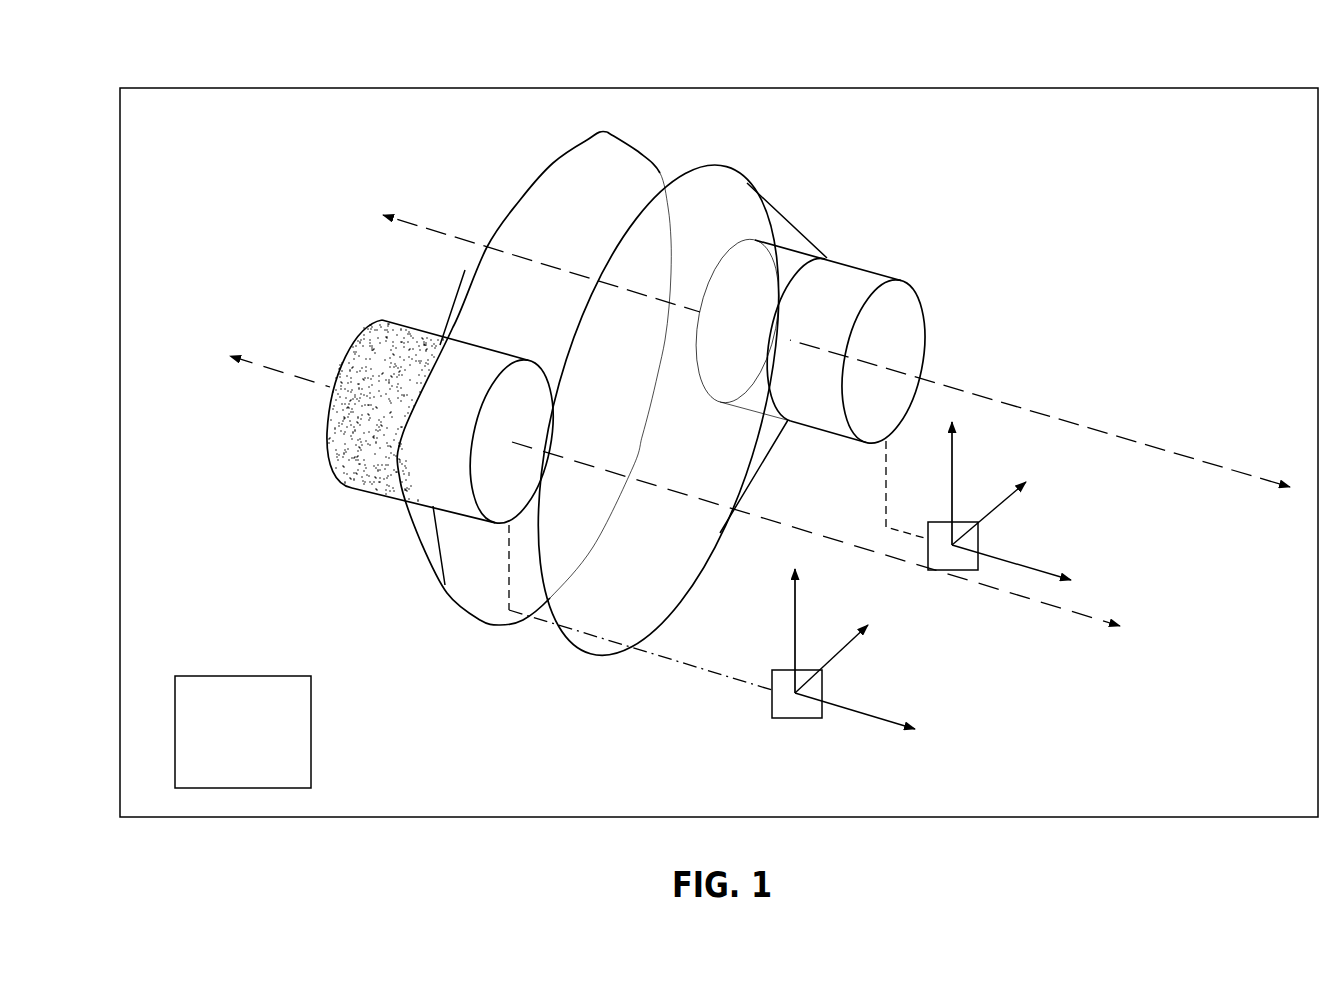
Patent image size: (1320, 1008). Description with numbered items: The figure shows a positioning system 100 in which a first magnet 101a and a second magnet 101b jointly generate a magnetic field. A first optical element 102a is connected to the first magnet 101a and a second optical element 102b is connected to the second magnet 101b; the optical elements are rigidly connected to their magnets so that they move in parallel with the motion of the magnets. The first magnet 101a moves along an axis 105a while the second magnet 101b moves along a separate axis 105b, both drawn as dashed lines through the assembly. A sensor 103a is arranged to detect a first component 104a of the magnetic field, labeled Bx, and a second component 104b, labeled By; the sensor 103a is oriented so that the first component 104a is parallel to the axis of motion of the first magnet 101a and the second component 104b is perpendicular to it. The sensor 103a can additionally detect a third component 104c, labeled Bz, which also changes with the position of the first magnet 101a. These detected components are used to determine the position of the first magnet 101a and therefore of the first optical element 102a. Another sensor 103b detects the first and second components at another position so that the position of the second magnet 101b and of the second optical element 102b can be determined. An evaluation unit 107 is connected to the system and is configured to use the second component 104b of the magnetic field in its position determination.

The positioning system 100 is at (140, 56).
The first magnet 101a is at (380, 320).
The second magnet 101b is at (872, 268).
The first optical element 102a is at (523, 193).
The second optical element 102b is at (703, 158).
The sensor 103a is at (771, 709).
The sensor 103b is at (968, 572).
The first component 104a is at (872, 717).
The second component 104b is at (853, 639).
The third component 104c is at (794, 620).
The axis 105a is at (292, 376).
The axis 105b is at (1128, 438).
The evaluation unit 107 is at (243, 676).